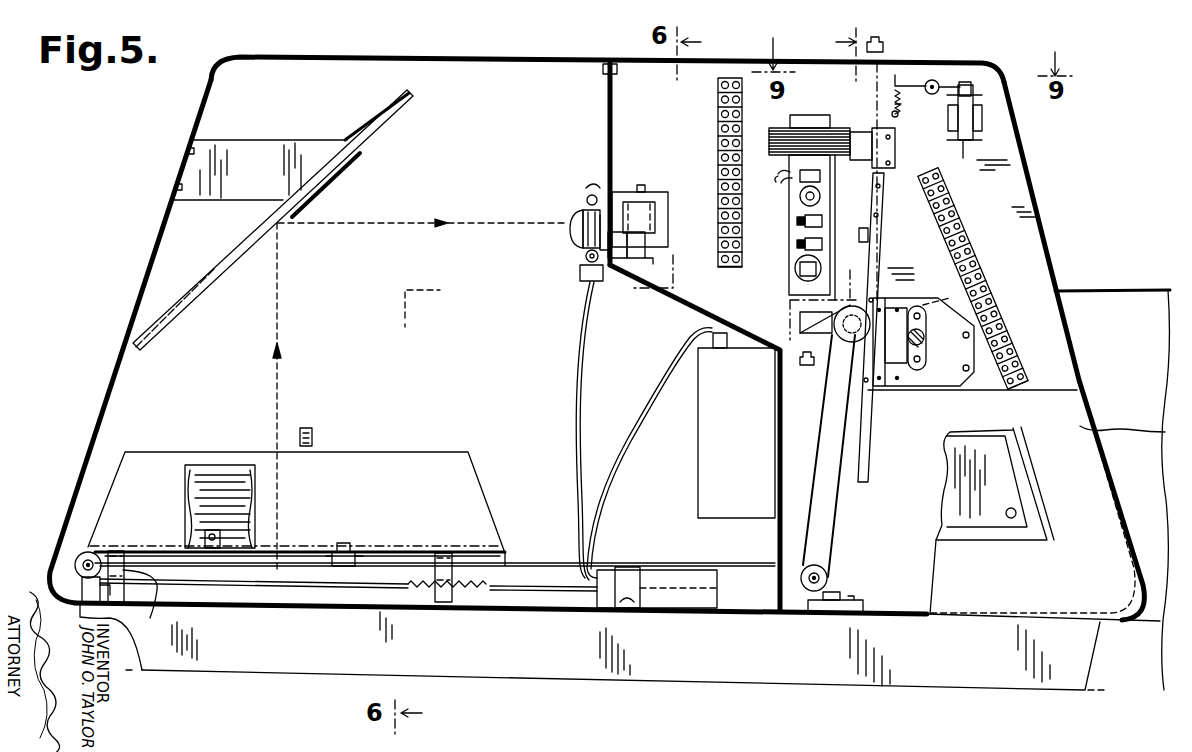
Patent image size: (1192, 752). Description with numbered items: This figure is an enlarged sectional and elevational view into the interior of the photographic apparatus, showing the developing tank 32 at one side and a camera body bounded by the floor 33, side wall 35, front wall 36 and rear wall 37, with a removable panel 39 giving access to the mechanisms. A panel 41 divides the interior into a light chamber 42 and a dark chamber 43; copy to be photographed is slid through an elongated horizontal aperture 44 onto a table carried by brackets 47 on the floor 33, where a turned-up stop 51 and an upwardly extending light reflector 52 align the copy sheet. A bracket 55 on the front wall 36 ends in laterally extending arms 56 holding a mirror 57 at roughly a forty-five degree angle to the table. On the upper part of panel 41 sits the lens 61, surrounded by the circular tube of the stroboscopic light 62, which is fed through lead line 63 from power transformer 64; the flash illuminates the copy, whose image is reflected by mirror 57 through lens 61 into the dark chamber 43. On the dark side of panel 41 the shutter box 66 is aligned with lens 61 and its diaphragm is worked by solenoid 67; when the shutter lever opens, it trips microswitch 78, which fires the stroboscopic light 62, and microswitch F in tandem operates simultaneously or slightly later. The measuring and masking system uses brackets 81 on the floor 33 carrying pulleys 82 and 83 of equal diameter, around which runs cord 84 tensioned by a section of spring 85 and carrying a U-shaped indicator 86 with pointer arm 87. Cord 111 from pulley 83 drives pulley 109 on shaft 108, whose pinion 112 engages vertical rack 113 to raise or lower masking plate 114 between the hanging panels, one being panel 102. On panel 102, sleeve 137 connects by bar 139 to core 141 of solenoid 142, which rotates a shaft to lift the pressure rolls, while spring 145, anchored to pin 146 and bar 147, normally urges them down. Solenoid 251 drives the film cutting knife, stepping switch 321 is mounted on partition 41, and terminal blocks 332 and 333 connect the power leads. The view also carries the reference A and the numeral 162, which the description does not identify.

The developing tank 32 is at (1140, 286).
The floor 33 is at (541, 614).
The side wall 35 is at (1000, 600).
The front wall 36 is at (156, 232).
The rear wall 37 is at (1032, 194).
The removable panel 39 is at (985, 460).
The panel 41 is at (690, 312).
The light chamber 42 is at (485, 72).
The dark chamber 43 is at (1062, 409).
The elongated horizontal aperture 44 is at (383, 460).
The brackets 47 is at (157, 592).
The stop 51 is at (88, 550).
The light reflector 52 is at (216, 466).
The bracket 55 is at (255, 152).
The laterally extending arms 56 is at (320, 198).
The mirror 57 is at (398, 100).
The lens 61 is at (576, 222).
The stroboscopic light 62 is at (582, 258).
The lead line 63 is at (578, 418).
The power transformer 64 is at (678, 597).
The shutter box 66 is at (620, 157).
The solenoid 67 is at (662, 192).
The microswitch 78 is at (622, 276).
The brackets 81 is at (52, 590).
The pulley 82 is at (75, 568).
The pulley 83 is at (830, 578).
The cord 84 is at (525, 560).
The spring 85 is at (426, 596).
The U-shaped indicator 86 is at (354, 545).
The pointer arm 87 is at (340, 543).
The panel 102 is at (1034, 212).
The shaft 108 is at (816, 366).
The pulley 109 is at (800, 320).
The cord 111 is at (838, 540).
The pinion 112 is at (851, 340).
The vertical rack 113 is at (862, 240).
The masking plate 114 is at (867, 436).
The sleeve 137 is at (933, 80).
The bar 139 is at (962, 84).
The core 141 is at (971, 90).
The solenoid 142 is at (987, 127).
The spring 145 is at (892, 97).
The pin 146 is at (891, 110).
The bar 147 is at (898, 84).
The bracket 162 is at (926, 303).
The solenoid 251 is at (805, 115).
The stepping switch 321 is at (752, 436).
The terminal block 332 is at (742, 268).
The terminal block 333 is at (976, 262).
The direction arrow A is at (310, 428).
The microswitch F is at (651, 270).